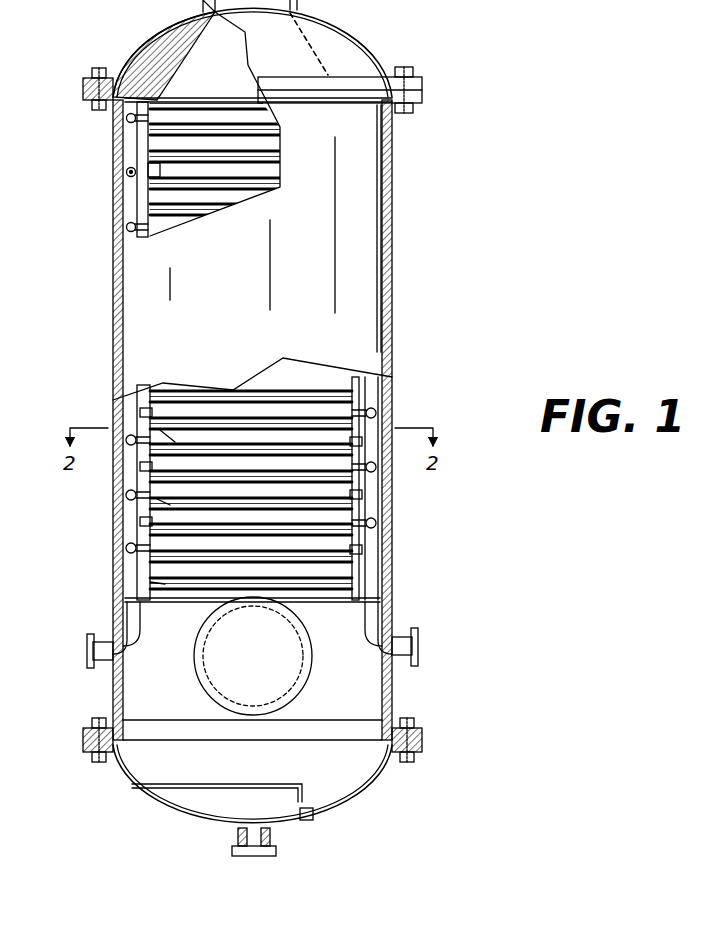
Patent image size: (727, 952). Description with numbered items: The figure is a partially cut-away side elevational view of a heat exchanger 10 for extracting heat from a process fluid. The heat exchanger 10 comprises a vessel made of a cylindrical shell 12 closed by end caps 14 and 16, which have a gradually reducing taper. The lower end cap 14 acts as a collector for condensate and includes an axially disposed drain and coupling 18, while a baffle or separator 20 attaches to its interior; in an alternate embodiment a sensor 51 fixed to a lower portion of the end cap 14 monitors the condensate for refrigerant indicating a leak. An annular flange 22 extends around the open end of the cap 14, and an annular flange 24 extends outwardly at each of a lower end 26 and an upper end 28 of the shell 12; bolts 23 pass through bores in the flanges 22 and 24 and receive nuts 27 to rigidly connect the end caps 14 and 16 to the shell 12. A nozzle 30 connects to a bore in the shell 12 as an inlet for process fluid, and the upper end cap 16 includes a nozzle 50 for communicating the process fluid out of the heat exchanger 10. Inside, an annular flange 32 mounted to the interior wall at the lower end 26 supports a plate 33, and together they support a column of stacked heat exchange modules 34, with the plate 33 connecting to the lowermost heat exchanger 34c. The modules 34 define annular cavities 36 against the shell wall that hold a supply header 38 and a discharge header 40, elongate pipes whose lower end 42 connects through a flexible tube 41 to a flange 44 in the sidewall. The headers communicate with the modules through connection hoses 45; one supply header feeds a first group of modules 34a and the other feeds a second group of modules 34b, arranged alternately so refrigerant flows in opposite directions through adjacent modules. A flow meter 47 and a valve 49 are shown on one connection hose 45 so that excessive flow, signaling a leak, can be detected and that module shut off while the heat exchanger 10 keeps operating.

The heat exchanger 10 is at (458, 318).
The cylindrical shell 12 is at (392, 393).
The end cap 14 is at (370, 800).
The end cap 16 is at (385, 45).
The drain and coupling 18 is at (278, 852).
The baffle or separator 20 is at (205, 790).
The annular flange 22 is at (425, 85).
The bolts 23 is at (86, 738).
The annular flange 24 is at (425, 95).
The lower end 26 is at (437, 702).
The nuts 27 is at (100, 760).
The upper end 28 is at (423, 128).
The nozzle 30 is at (313, 657).
The annular flange 32 is at (365, 605).
The plate 33 is at (322, 600).
The heat exchange modules 34 is at (335, 520).
The heat exchange modules of first group 34a is at (168, 504).
The heat exchange modules of second group 34b is at (175, 442).
The lowermost heat exchanger 34c is at (165, 584).
The annular cavities 36 is at (385, 417).
The supply header 38 is at (130, 562).
The discharge header 40 is at (355, 545).
The tube 41 is at (125, 620).
The lower end 42 is at (130, 596).
The flange 44 is at (95, 648).
The connection hoses 45 is at (145, 512).
The flow meter 47 is at (133, 155).
The valve 49 is at (128, 176).
The nozzle 50 is at (395, 3).
The sensor 51 is at (335, 812).